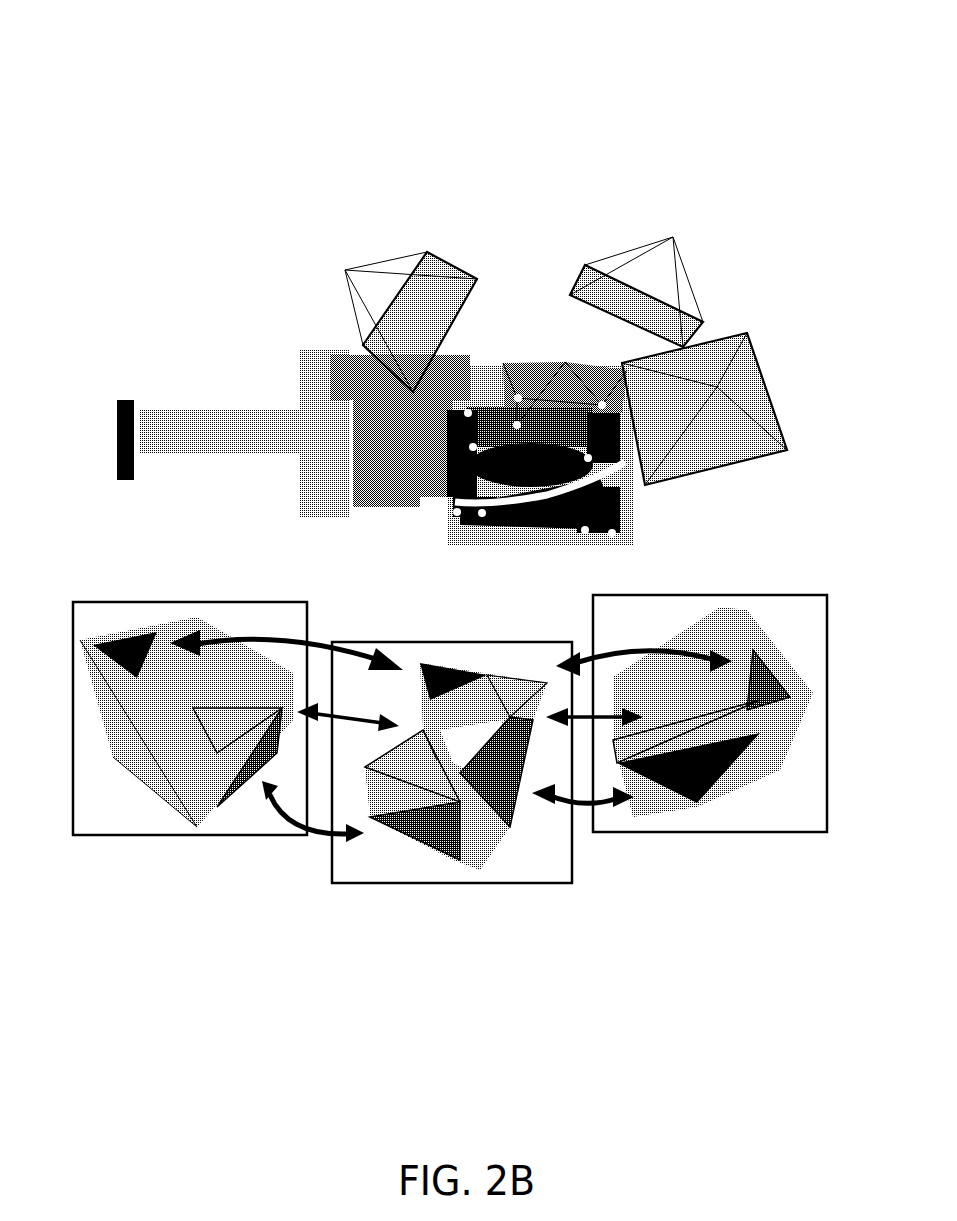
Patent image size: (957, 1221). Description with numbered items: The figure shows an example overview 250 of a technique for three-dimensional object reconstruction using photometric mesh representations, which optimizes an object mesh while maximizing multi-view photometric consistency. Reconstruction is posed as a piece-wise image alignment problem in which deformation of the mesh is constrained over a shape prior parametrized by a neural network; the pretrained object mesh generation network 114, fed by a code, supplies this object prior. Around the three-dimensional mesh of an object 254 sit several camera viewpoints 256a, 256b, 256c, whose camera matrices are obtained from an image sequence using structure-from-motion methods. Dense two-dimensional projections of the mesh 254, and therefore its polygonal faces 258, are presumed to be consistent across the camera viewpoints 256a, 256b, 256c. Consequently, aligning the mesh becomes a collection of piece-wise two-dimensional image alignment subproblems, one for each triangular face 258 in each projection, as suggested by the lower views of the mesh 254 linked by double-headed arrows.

The example overview 250 is at (693, 64).
The pretrained object mesh generation network 114 is at (128, 347).
The 3D mesh of an object 254 is at (648, 533).
The camera viewpoint 256a is at (409, 230).
The camera viewpoint 256b is at (691, 230).
The camera viewpoint 256c is at (788, 380).
The polygonal face 258 is at (258, 773).